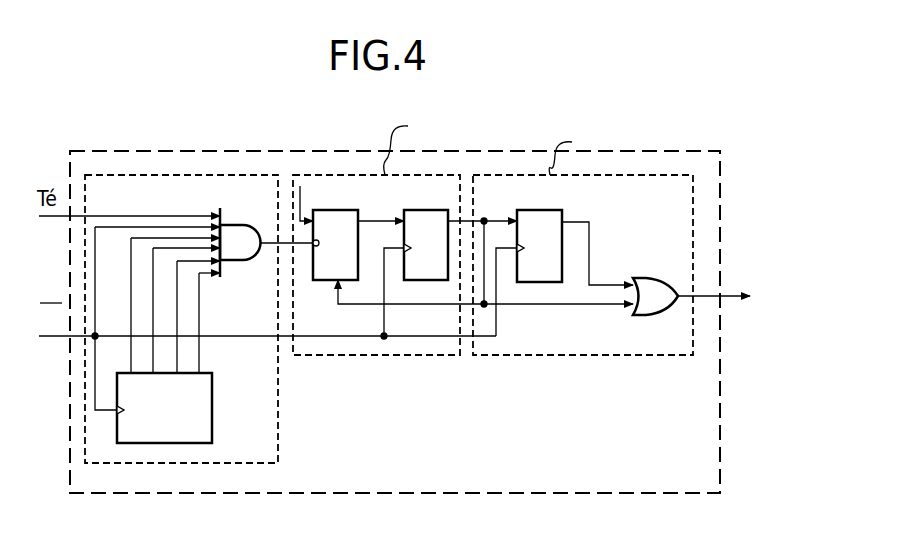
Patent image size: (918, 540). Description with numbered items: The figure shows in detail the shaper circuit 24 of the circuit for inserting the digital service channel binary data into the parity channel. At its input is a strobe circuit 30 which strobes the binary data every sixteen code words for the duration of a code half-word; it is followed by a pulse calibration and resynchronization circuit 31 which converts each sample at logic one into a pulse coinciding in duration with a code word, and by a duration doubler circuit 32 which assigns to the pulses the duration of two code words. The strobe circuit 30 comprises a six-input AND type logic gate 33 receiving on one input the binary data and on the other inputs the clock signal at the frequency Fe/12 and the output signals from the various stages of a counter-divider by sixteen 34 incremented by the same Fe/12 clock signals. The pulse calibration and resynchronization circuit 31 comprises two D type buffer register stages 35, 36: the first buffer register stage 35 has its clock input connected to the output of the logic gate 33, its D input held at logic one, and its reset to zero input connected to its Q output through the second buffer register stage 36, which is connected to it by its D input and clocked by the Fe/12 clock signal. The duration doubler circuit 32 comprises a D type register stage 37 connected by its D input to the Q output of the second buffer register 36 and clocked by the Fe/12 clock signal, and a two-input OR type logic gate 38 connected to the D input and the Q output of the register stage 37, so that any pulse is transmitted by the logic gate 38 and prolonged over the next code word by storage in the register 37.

The shaper circuit 24 is at (104, 151).
The strobe circuit 30 is at (278, 422).
The pulse calibration and resynchronization circuit 31 is at (400, 355).
The duration doubler circuit 32 is at (573, 357).
The logic gate 33 is at (239, 195).
The counter-divider by sixteen 34 is at (212, 412).
The first buffer register stage 35 is at (338, 210).
The second buffer register stage 36 is at (423, 214).
The D type register stage 37 is at (538, 218).
The logic gate 38 is at (655, 287).
The clock signal Fe source 12 is at (267, 310).